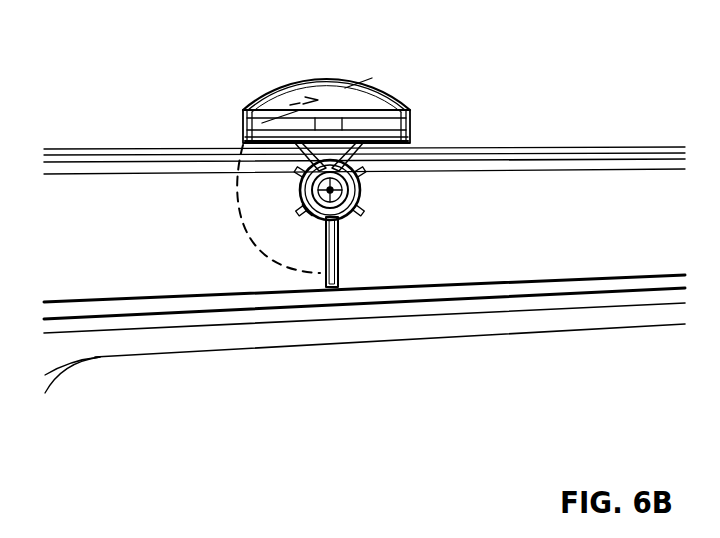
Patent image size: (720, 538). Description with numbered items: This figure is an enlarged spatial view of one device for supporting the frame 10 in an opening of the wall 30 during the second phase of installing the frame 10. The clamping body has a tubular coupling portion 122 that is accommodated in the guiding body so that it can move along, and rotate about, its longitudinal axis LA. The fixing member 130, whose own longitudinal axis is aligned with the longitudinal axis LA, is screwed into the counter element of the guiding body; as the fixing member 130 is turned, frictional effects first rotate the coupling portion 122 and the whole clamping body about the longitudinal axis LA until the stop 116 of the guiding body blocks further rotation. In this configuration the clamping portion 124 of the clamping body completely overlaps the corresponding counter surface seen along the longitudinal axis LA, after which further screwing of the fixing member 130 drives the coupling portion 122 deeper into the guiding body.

The frame 10 is at (160, 215).
The wall 30 is at (460, 130).
The clamping portion 124 is at (333, 100).
The stop 116 is at (362, 172).
The fixing member 130 is at (349, 218).
The coupling portion 122 is at (312, 215).
The longitudinal axis LA is at (307, 187).